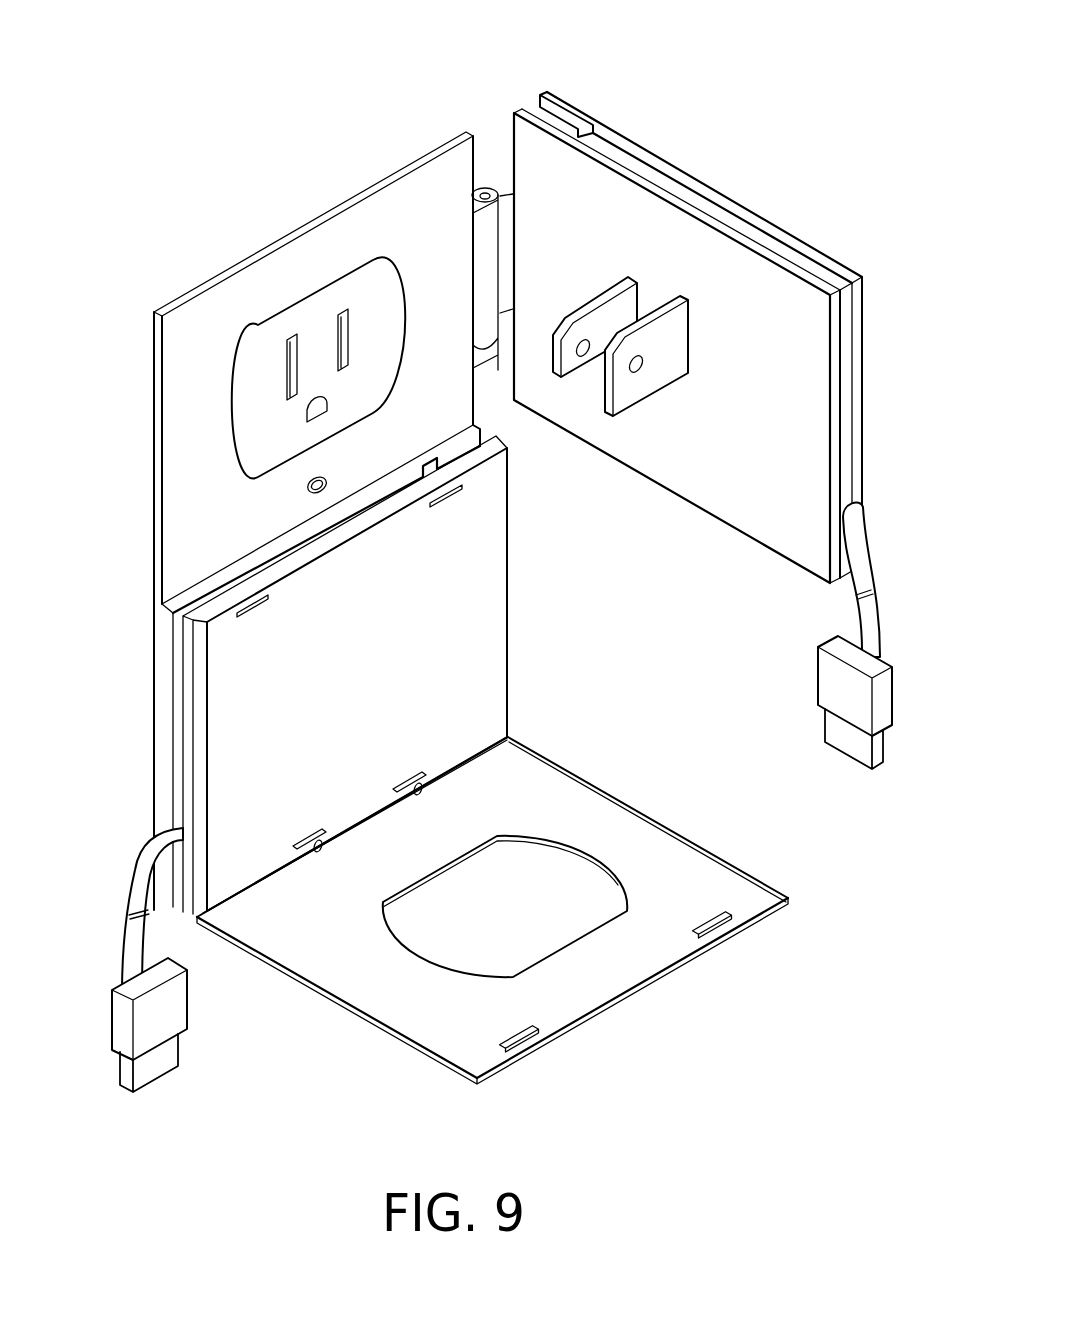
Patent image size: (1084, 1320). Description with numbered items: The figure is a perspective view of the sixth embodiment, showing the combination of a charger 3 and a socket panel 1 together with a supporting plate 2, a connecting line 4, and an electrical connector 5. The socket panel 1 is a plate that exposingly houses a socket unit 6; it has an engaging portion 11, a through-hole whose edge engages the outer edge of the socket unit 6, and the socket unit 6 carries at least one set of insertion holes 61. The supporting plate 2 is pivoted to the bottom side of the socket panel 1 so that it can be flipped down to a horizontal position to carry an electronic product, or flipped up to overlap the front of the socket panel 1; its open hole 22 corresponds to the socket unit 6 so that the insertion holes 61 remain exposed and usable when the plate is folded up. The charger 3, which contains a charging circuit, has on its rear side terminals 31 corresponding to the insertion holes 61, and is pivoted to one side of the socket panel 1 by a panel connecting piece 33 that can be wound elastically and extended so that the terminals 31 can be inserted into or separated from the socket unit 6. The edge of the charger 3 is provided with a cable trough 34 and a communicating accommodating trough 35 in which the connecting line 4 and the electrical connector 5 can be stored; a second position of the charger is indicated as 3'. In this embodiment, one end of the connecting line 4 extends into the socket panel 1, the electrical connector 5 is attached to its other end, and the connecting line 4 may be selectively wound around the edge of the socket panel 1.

The socket panel 1 is at (188, 289).
The supporting plate 2 is at (492, 899).
The charger 3 is at (688, 301).
The side plate (folded position) 3' is at (391, 675).
The connecting line 4 is at (849, 614).
The electrical connector 5 is at (809, 679).
The socket unit 6 is at (245, 341).
The engaging portion 11 is at (302, 298).
The open hole 22 is at (582, 873).
The terminals 31 is at (658, 383).
The panel connecting piece 33 is at (483, 270).
The cable trough 34 is at (658, 172).
The accommodating trough 35 is at (567, 121).
The insertion holes 61 is at (343, 330).